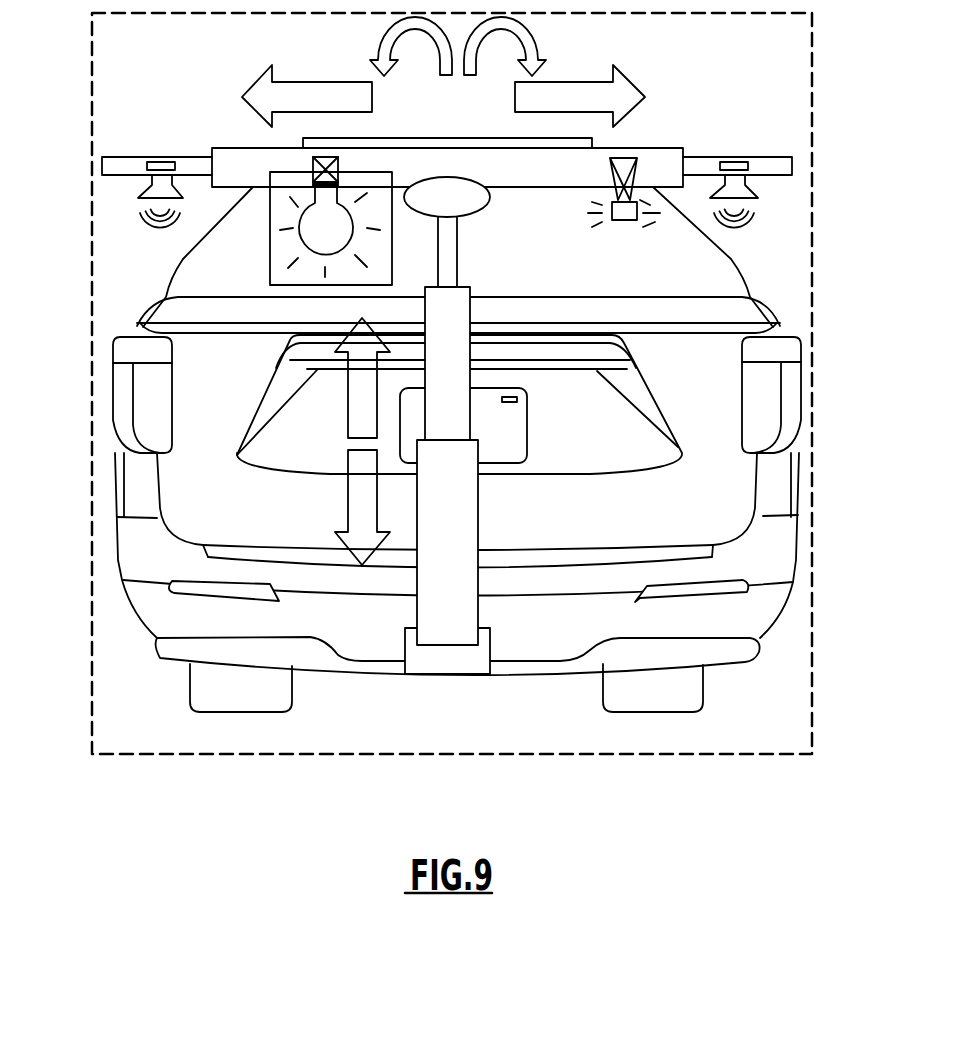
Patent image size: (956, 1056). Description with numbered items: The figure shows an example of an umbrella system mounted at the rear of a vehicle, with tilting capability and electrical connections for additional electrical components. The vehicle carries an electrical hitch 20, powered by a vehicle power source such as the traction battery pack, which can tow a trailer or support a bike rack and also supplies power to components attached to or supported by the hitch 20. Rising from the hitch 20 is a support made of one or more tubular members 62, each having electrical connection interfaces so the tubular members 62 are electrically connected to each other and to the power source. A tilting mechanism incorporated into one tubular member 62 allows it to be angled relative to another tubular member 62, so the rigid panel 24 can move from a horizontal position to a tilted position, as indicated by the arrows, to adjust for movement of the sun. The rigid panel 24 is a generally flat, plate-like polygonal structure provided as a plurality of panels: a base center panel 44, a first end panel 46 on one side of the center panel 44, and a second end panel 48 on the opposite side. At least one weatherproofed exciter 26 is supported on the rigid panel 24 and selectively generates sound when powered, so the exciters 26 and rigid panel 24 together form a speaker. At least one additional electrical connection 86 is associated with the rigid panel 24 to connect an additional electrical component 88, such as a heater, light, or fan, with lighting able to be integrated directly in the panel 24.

The electrical hitch 20 is at (452, 662).
The rigid panel 24 is at (773, 163).
The exciter 26 is at (140, 193).
The center panel 44 is at (512, 168).
The first end panel 46 is at (235, 164).
The second end panel 48 is at (698, 165).
The tubular member 62 is at (455, 415).
The additional electrical connection 86 is at (312, 163).
The additional electrical component 88 is at (313, 240).